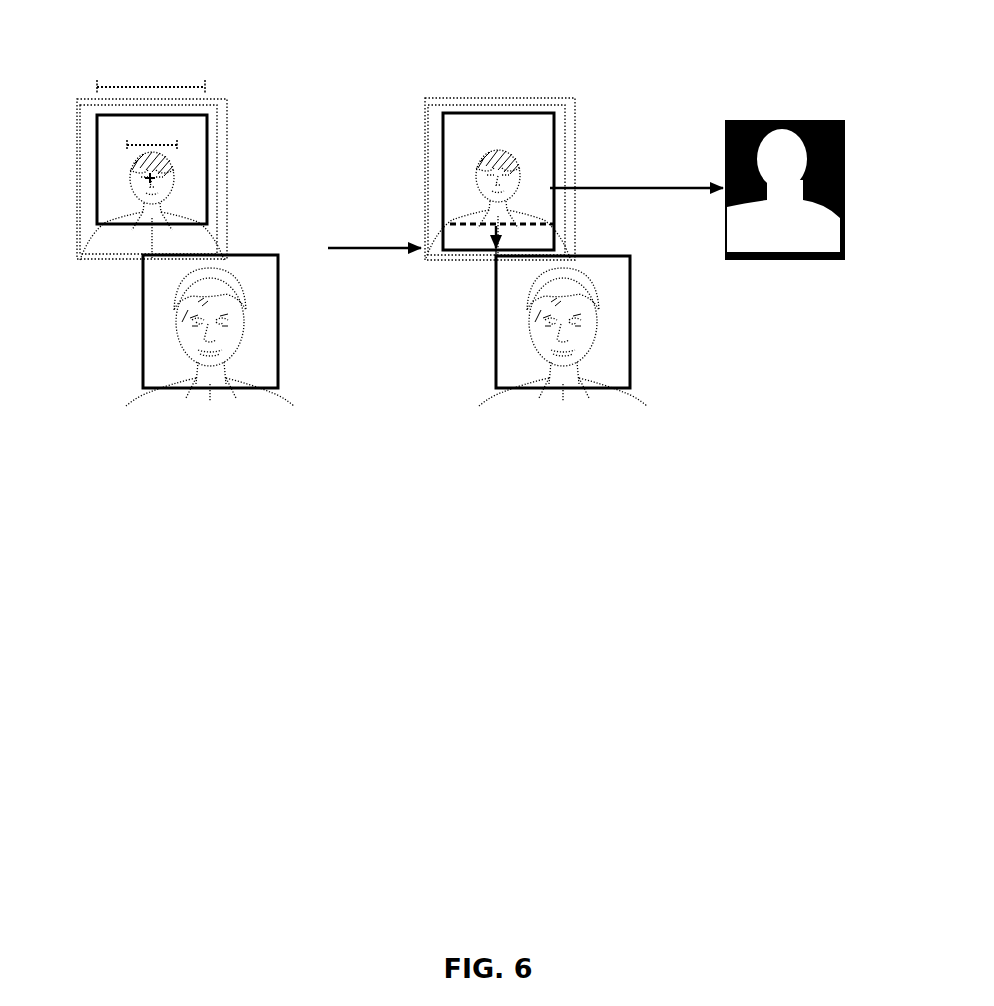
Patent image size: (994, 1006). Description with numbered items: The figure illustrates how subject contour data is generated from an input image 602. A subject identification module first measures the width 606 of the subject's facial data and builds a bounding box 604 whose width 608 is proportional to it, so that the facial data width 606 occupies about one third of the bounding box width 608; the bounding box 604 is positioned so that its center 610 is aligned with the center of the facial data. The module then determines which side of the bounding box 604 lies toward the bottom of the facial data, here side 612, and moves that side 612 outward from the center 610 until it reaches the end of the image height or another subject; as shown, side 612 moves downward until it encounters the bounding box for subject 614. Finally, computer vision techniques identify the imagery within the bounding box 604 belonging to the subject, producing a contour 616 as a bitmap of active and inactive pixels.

The input image 602 is at (73, 85).
The bounding box 604 is at (208, 163).
The width of the facial data 606 is at (152, 136).
The width of the bounding box 608 is at (151, 77).
The center of the bounding box 610 is at (144, 178).
The side of the bounding box 612 is at (501, 229).
The subject 614 is at (283, 350).
The contour 616 is at (876, 148).